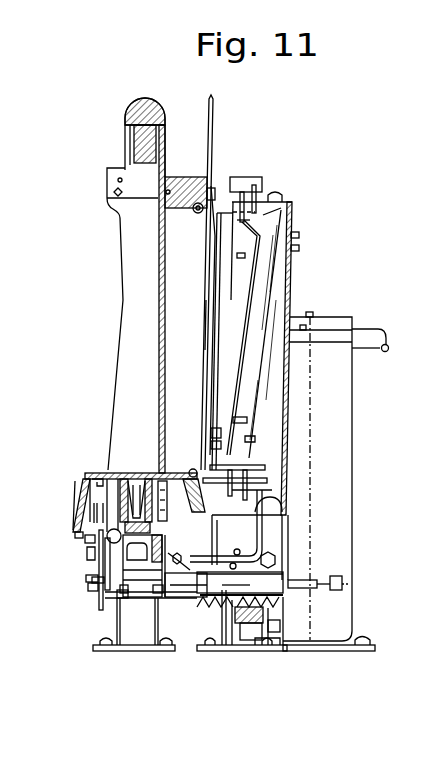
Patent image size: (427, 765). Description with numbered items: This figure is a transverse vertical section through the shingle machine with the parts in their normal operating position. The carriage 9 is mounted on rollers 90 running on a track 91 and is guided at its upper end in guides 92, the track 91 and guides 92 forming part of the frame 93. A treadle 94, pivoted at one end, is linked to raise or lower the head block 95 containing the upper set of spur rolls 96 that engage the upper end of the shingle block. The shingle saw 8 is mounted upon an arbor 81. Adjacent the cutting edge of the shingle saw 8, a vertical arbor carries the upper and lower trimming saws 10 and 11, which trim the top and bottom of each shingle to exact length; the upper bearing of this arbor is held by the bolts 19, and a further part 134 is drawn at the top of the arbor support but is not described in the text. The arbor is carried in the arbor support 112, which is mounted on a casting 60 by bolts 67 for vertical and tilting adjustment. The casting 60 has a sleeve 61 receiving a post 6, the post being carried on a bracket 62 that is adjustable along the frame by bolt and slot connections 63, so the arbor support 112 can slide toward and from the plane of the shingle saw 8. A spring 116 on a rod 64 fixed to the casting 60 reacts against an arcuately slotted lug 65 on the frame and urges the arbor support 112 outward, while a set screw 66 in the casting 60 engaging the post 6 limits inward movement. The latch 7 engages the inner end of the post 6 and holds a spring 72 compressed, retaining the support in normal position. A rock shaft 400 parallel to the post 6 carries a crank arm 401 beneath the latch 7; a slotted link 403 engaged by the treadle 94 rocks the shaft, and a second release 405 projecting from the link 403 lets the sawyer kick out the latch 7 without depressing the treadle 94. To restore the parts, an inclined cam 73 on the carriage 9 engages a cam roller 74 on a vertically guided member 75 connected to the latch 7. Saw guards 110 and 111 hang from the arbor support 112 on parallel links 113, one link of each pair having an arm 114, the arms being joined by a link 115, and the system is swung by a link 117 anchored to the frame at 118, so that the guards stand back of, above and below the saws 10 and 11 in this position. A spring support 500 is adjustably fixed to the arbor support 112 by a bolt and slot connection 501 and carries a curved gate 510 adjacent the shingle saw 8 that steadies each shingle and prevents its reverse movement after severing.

The post 6 is at (93, 590).
The latch 7 is at (100, 605).
The shingle saw 8 is at (213, 104).
The carriage 9 is at (142, 148).
The upper trimming saw 10 is at (207, 256).
The lower trimming saw 11 is at (206, 459).
The bolts 19 is at (300, 235).
The casting 60 is at (277, 560).
The sleeve 61 is at (272, 600).
The bracket 62 is at (166, 577).
The bolt and slot connections 63 is at (187, 594).
The rod 64 is at (170, 606).
The arcuately slotted lug 65 is at (205, 606).
The set screw 66 is at (343, 580).
The bolts 67 is at (264, 548).
The spring 72 is at (88, 580).
The cam 73 is at (80, 510).
The cam roller 74 is at (85, 542).
The member 75 is at (98, 558).
The arbor 81 is at (381, 343).
The rollers 90 is at (110, 490).
The track 91 is at (137, 490).
The guides 92 is at (142, 110).
The frame 93 is at (137, 632).
The treadle 94 is at (250, 630).
The head block 95 is at (172, 176).
The spur rolls 96 is at (197, 214).
The upper saw guard 110 is at (236, 182).
The lower saw guard 111 is at (192, 512).
The arbor support 112 is at (290, 297).
The parallel links 113 is at (258, 195).
The arm 114 is at (260, 233).
The link 115 is at (250, 380).
The spring 116 is at (265, 616).
The link 117 is at (284, 506).
The anchorage 118 is at (186, 551).
The cap 134 is at (276, 193).
The rock shaft 400 is at (117, 628).
The crank arm 401 is at (99, 608).
The slotted link 403 is at (222, 640).
The second release 405 is at (280, 645).
The spring support 500 is at (258, 398).
The bolt and slot connection 501 is at (246, 257).
The curved gate 510 is at (210, 327).